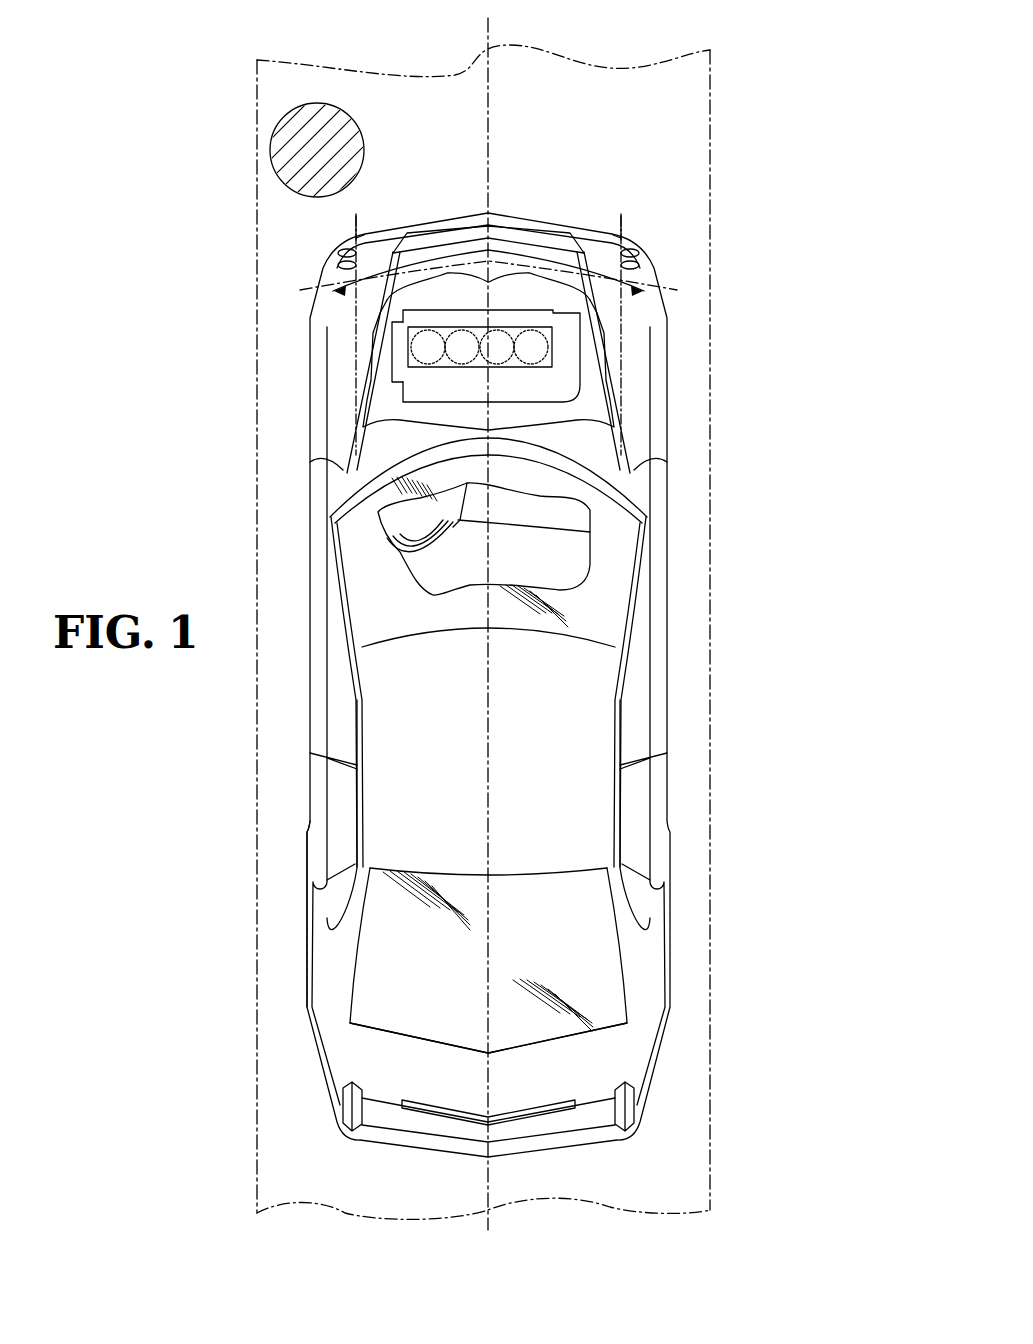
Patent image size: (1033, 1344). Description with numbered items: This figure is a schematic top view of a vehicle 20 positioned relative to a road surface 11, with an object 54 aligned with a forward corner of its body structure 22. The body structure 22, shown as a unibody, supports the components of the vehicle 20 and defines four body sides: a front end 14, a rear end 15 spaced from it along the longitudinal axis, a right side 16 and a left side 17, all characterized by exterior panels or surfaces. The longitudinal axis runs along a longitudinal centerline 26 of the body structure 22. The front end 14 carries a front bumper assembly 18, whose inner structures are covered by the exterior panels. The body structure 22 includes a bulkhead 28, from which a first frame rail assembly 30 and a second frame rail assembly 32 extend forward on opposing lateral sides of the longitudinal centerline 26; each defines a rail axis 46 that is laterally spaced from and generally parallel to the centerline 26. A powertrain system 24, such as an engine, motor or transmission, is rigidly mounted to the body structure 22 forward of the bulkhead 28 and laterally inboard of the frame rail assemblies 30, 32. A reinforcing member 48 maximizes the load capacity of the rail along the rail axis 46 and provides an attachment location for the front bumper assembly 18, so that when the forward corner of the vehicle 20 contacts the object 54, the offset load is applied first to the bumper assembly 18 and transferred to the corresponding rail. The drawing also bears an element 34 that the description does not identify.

The road surface 11 is at (257, 742).
The front end 14 is at (470, 227).
The rear end 15 is at (413, 1150).
The right side 16 is at (665, 721).
The left side 17 is at (308, 825).
The front bumper assembly 18 is at (535, 262).
The vehicle 20 is at (716, 106).
The body structure 22 is at (582, 800).
The powertrain system 24 is at (562, 341).
The longitudinal centerline 26 is at (572, 1255).
The bulkhead 28 is at (773, 487).
The first frame rail assembly 30 is at (360, 338).
The second frame rail assembly 32 is at (622, 405).
The engine mount 34 is at (395, 387).
The rail axis 46 is at (617, 226).
The reinforcing member 48 is at (625, 292).
The object 54 is at (297, 162).